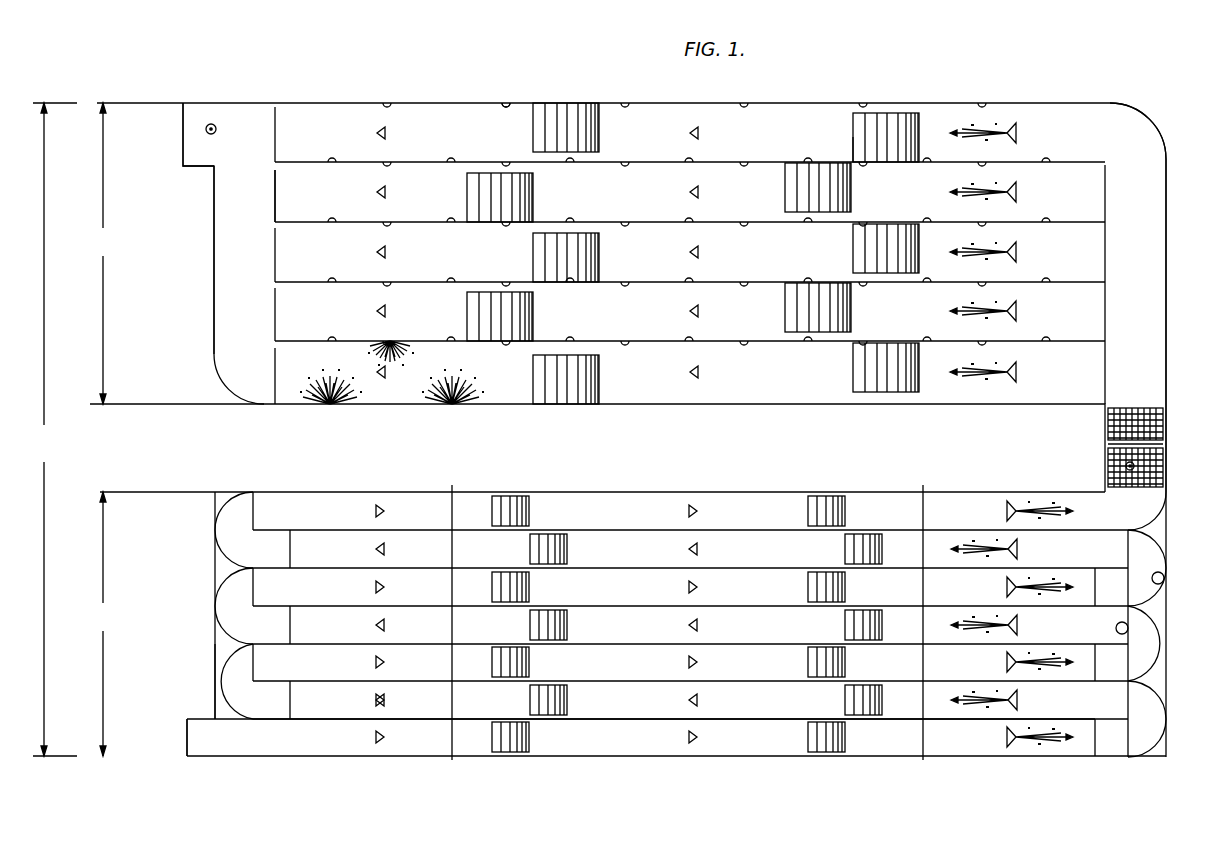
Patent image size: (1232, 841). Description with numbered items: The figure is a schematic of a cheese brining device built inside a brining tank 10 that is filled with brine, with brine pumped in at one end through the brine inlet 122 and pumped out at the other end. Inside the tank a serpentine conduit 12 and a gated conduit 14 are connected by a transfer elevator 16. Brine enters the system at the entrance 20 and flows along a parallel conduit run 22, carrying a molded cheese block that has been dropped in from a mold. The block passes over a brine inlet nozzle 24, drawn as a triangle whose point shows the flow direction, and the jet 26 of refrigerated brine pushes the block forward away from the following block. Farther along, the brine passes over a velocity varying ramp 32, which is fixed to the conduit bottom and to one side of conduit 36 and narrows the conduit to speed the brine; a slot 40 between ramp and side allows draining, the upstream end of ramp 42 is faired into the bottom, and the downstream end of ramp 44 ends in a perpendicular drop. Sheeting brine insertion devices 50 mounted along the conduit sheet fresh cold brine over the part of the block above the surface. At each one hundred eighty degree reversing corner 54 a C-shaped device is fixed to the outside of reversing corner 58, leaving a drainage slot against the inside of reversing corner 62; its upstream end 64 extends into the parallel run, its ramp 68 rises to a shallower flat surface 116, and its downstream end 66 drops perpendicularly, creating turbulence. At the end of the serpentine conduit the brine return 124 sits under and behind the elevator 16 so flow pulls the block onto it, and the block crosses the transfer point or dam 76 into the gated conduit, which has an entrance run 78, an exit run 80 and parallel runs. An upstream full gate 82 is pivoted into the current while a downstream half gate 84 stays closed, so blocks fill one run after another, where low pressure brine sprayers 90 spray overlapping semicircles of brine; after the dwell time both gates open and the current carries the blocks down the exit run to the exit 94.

The brining tank 10 is at (54, 429).
The serpentine conduit 12 is at (103, 624).
The gated conduit 14 is at (103, 253).
The transfer elevator 16 is at (1128, 429).
The entrance 20 is at (187, 728).
The parallel conduit run 22 is at (790, 720).
The brine inlet nozzle 24 is at (1010, 127).
The jet or brine stream 26 is at (1000, 395).
The velocity varying ramp 32 is at (897, 122).
The side of conduit 36 is at (372, 702).
The opening or slot 40 is at (884, 393).
The upstream end of ramp 42 is at (600, 130).
The downstream end of ramp 44 is at (853, 140).
The sheeting brine insertion device 50 is at (922, 543).
The 180 degree reversing corner 54 is at (1158, 585).
The outside of reversing corner 58 is at (225, 525).
The inside of reversing corner 62 is at (250, 603).
The upstream end of corner brine flow device 64 is at (1095, 743).
The downstream end of corner brine flow device 66 is at (1127, 640).
The ramp 68 is at (1113, 730).
The transfer point or dam 76 is at (1163, 444).
The entrance run 78 is at (1133, 196).
The exit run 80 is at (240, 252).
The upstream full gate 82 is at (1148, 300).
The downstream half gate 84 is at (275, 195).
The gated conduit brine sprayer 90 is at (447, 160).
The exit 94 is at (183, 135).
The highest point of flow varying device 116 is at (232, 682).
The brine inlet 122 is at (1165, 415).
The brine return 124 is at (208, 124).